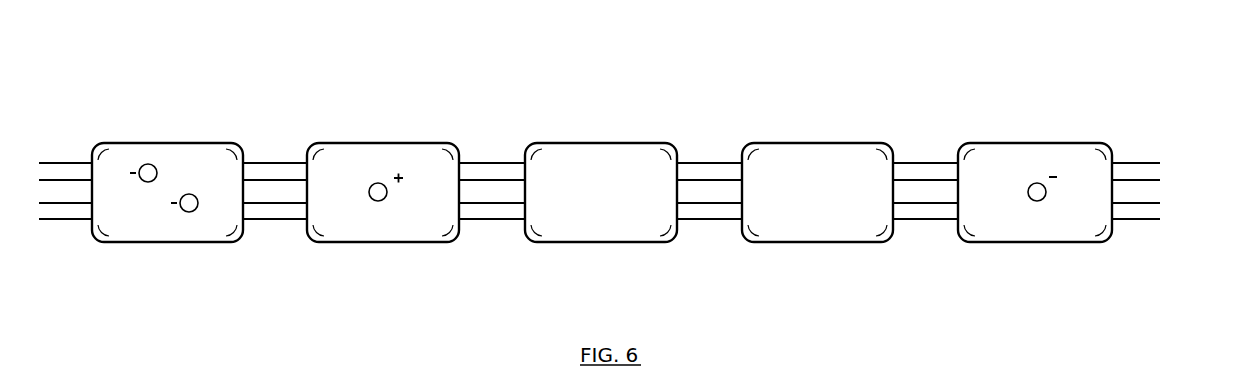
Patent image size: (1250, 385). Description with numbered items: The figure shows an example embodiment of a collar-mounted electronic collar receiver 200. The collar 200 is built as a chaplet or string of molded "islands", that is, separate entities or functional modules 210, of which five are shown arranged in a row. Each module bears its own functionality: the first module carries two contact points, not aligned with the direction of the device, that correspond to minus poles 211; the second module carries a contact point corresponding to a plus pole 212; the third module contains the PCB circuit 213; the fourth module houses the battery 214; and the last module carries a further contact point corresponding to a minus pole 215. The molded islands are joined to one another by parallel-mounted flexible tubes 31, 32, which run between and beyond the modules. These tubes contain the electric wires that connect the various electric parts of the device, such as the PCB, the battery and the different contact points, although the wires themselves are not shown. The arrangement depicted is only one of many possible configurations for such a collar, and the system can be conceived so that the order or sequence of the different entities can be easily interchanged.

The electronic collar receiver 200 is at (880, 122).
The functional modules 210 is at (535, 136).
The minus poles 211 is at (198, 242).
The plus pole 212 is at (427, 242).
The PCB circuit 213 is at (643, 242).
The battery 214 is at (860, 242).
The minus pole 215 is at (1070, 242).
The flexible tube 31 is at (1158, 162).
The flexible tube 32 is at (1158, 219).